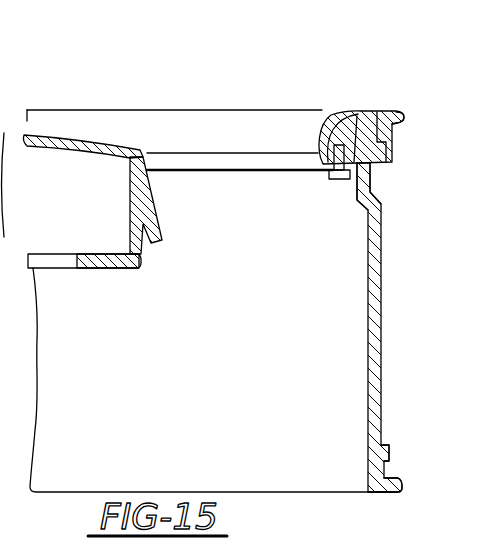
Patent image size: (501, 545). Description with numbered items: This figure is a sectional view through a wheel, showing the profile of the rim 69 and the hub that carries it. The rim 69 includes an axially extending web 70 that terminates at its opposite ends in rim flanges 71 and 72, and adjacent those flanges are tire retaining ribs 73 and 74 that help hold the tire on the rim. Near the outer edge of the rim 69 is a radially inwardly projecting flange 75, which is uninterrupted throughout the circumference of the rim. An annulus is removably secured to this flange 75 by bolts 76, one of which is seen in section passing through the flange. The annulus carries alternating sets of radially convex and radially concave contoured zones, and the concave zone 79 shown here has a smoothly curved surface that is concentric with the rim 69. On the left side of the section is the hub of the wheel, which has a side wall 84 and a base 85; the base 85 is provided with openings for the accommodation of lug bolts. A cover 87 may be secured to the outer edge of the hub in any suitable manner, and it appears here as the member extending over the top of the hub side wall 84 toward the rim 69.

The rim 69 is at (378, 110).
The axially extending web 70 is at (380, 322).
The rim flange 71 is at (404, 120).
The rim flange 72 is at (400, 490).
The tire retaining rib 73 is at (390, 162).
The tire retaining rib 74 is at (383, 452).
The radially inwardly projecting flange 75 is at (318, 172).
The bolt 76 is at (342, 179).
The radially concave contoured zone 79 is at (325, 130).
The side wall 84 is at (127, 237).
The base 85 is at (118, 268).
The cover 87 is at (92, 137).